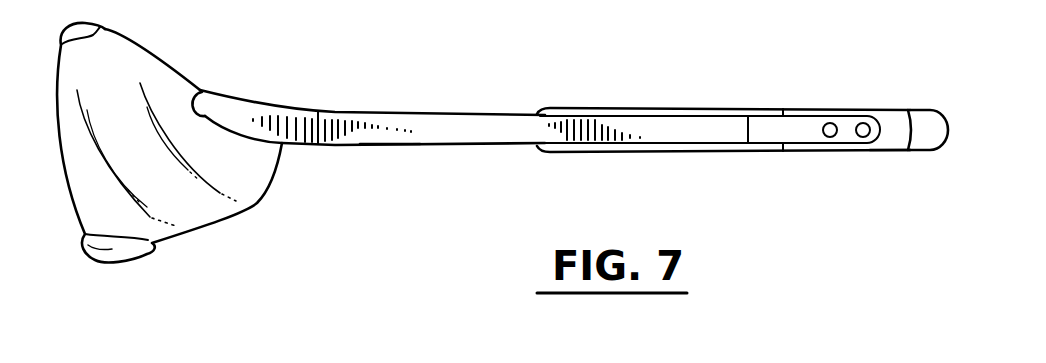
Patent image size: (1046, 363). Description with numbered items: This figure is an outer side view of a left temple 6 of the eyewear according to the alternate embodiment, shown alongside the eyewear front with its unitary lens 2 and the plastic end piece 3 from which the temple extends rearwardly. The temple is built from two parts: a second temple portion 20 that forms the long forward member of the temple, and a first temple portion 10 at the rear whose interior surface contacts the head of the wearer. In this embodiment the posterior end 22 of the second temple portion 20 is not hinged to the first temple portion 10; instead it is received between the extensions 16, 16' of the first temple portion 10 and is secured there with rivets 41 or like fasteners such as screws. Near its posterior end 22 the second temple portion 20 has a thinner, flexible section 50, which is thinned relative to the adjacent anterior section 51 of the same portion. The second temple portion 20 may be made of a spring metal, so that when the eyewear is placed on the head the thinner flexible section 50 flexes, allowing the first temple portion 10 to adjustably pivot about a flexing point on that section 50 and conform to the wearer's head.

The unitary lens 2 is at (162, 80).
The end piece 3 is at (287, 113).
The second temple portion 20 is at (467, 122).
The left temple 6 is at (392, 158).
The anterior section 51 is at (652, 118).
The flexible section 50 is at (727, 125).
The extension 16 is at (780, 74).
The extension 16' is at (762, 176).
The rivets 41 is at (858, 118).
The first temple portion 10 is at (895, 120).
The posterior end 22 is at (888, 145).